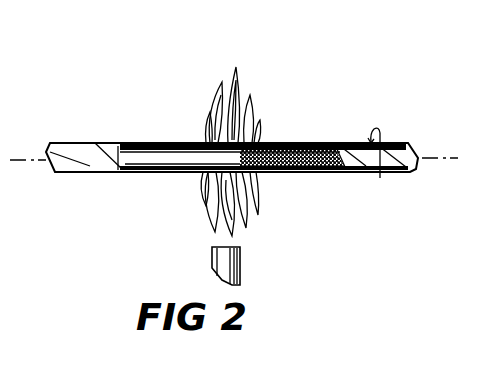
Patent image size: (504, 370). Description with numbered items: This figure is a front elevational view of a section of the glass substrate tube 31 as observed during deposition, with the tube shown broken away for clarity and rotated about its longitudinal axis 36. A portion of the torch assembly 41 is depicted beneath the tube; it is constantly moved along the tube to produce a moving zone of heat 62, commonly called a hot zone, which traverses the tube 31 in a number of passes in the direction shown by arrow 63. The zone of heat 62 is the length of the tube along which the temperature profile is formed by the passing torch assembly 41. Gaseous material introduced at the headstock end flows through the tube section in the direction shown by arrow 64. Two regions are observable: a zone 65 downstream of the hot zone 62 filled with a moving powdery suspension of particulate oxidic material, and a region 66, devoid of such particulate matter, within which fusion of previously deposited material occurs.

The glass starting tube 31 is at (232, 172).
The longitudinal axis 36 is at (426, 158).
The torch assembly 41 is at (213, 262).
The zone of heat 62 is at (254, 130).
The arrow 63 is at (280, 259).
The arrow 64 is at (127, 126).
The zone 65 is at (299, 172).
The region 66 is at (178, 172).